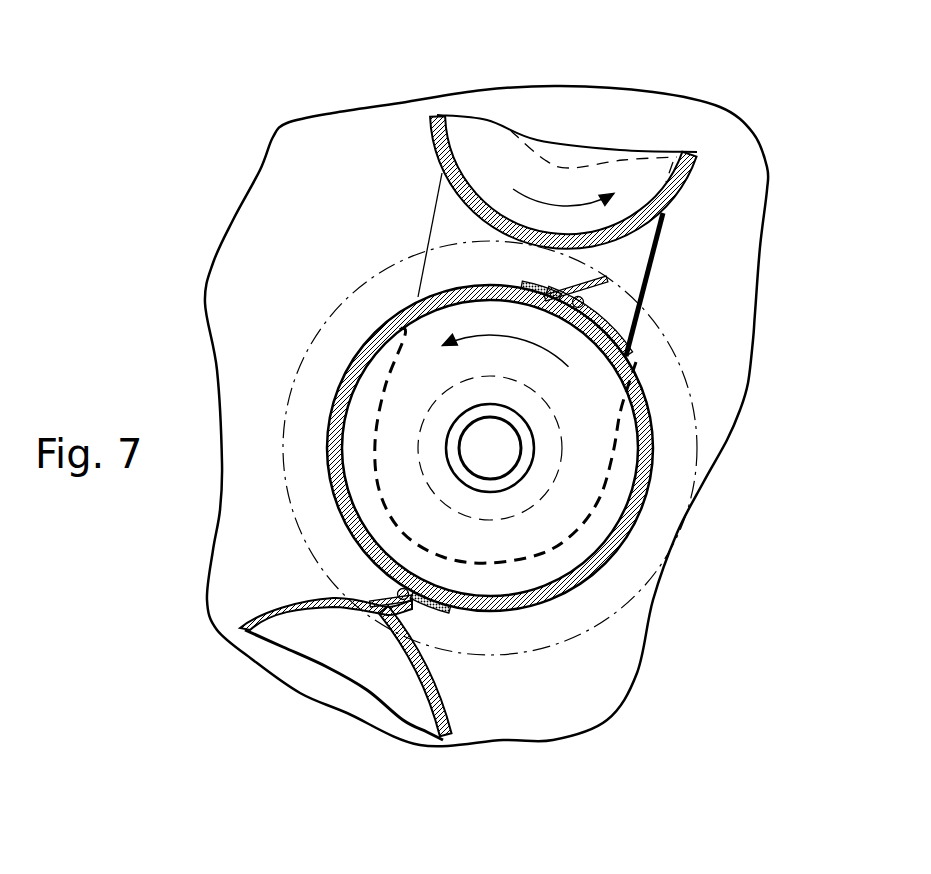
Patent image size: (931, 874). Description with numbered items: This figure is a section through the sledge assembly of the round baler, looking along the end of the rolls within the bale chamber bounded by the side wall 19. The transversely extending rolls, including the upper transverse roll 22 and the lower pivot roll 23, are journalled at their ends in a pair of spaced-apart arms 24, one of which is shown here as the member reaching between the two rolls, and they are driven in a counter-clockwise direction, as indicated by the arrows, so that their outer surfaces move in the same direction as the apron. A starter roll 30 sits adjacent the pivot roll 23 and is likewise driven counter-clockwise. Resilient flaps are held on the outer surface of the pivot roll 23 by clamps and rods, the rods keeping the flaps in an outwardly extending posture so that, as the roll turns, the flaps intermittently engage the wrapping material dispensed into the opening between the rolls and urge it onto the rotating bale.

The side wall 19 is at (227, 228).
The transverse roll 22 is at (430, 152).
The pivot roll 23 is at (653, 502).
The arm 24 is at (652, 258).
The starter roll 30 is at (262, 607).